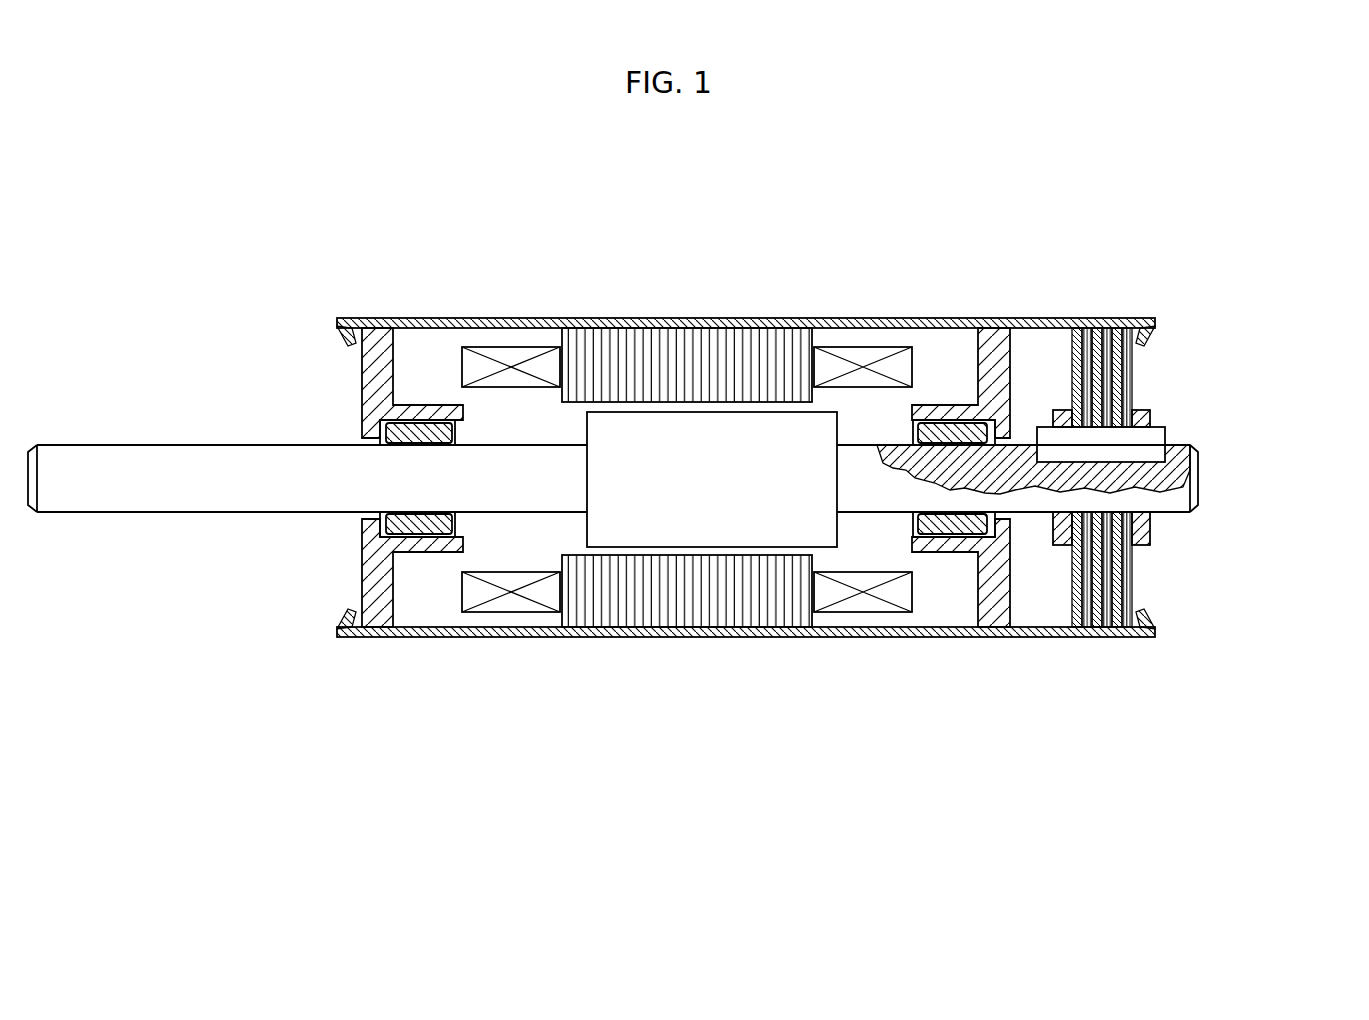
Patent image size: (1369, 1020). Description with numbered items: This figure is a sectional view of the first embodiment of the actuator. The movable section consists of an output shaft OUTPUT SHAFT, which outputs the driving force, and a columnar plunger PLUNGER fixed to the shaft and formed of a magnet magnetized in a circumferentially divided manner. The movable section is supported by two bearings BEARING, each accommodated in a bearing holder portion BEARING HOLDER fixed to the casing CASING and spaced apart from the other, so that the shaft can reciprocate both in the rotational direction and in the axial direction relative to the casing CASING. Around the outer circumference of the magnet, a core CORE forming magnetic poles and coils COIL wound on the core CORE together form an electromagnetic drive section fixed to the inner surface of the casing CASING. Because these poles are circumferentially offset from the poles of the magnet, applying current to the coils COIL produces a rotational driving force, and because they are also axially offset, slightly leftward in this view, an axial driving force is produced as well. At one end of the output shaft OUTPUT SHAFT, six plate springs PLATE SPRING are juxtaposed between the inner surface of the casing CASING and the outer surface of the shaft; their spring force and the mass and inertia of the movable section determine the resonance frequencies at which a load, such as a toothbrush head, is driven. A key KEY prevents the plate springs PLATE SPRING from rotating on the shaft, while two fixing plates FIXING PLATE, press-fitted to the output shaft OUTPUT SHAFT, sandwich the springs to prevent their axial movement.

The casing CASING is at (430, 323).
The core CORE is at (660, 363).
The coil COIL is at (873, 362).
The key KEY is at (1160, 437).
The output shaft OUTPUT SHAFT is at (157, 497).
The bearing BEARING is at (403, 527).
The bearing holder portion BEARING HOLDER is at (443, 547).
The plunger PLUNGER is at (673, 510).
The plate spring PLATE SPRING is at (1112, 620).
The fixing plate FIXING PLATE is at (1073, 542).